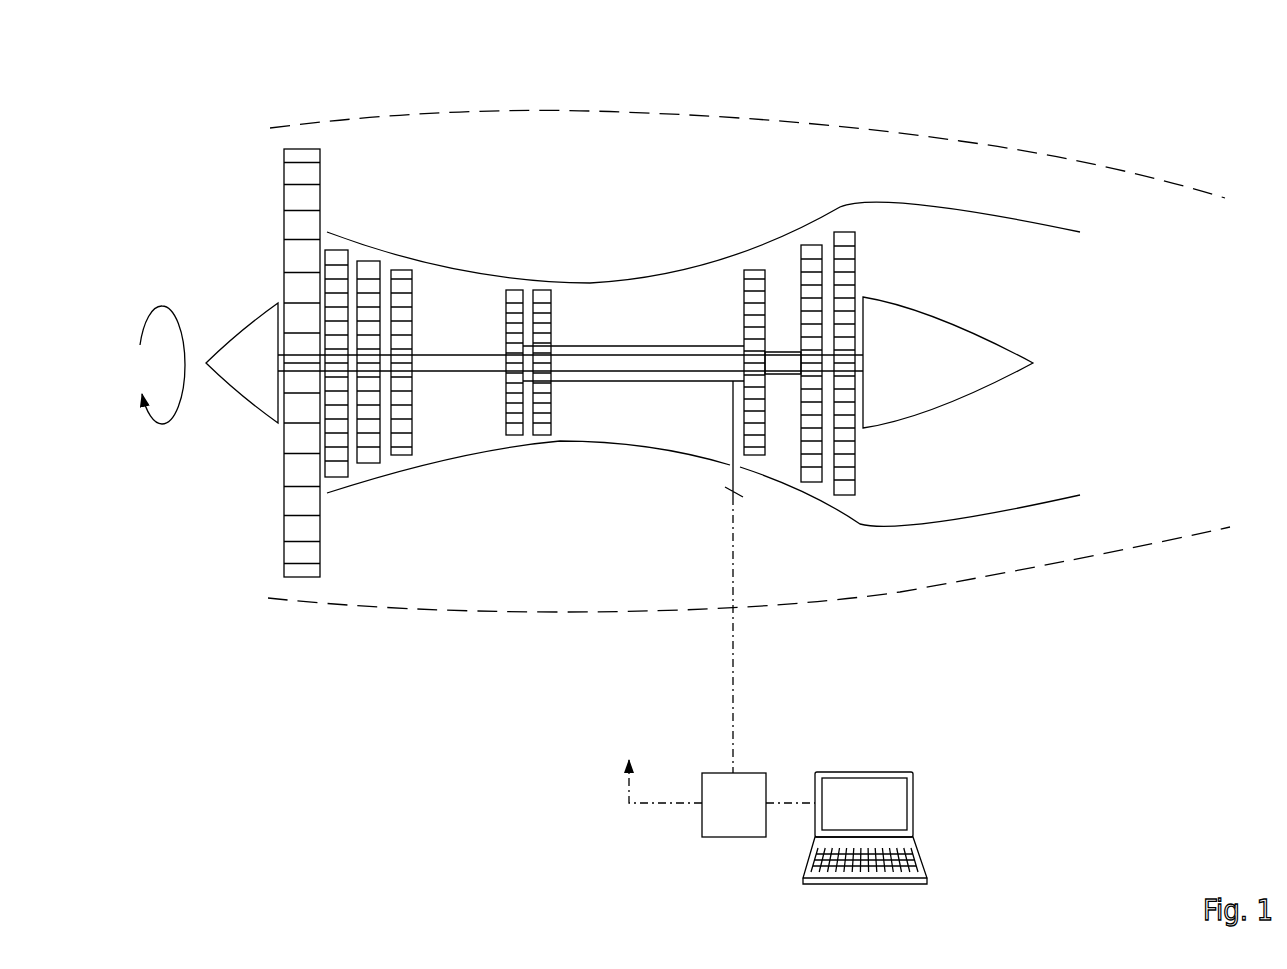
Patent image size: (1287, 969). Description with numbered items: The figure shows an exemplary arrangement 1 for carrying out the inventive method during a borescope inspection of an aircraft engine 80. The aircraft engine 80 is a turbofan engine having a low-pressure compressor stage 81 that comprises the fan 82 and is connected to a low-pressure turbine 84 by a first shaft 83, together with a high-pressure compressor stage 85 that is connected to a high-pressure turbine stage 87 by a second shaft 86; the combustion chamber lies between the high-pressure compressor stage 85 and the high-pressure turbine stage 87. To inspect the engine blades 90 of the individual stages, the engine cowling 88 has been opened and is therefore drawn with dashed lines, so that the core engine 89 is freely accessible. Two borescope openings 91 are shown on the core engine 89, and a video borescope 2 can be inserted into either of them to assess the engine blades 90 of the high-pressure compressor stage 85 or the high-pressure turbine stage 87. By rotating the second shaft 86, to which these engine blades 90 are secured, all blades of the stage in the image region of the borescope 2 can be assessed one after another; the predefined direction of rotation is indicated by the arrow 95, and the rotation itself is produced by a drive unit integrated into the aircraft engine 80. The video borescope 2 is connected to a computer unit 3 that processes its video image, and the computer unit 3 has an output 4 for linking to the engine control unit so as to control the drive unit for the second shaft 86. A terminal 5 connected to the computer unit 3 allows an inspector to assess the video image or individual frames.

The arrangement 1 is at (1005, 785).
The video borescope 2 is at (733, 420).
The computer unit 3 is at (727, 813).
The output 4 is at (629, 780).
The terminal 5 is at (863, 813).
The aircraft engine 80 is at (1122, 114).
The low-pressure compressor stage 81 is at (367, 246).
The fan 82 is at (300, 148).
The first shaft 83 is at (453, 357).
The low-pressure turbine 84 is at (826, 239).
The high-pressure compressor stage 85 is at (527, 283).
The second shaft 86 is at (694, 345).
The high-pressure turbine stage 87 is at (752, 264).
The engine cowling 88 is at (1160, 183).
The core engine 89 is at (977, 198).
The engine blades 90 is at (767, 344).
The borescope openings 91 is at (528, 444).
The arrow 95 is at (160, 305).